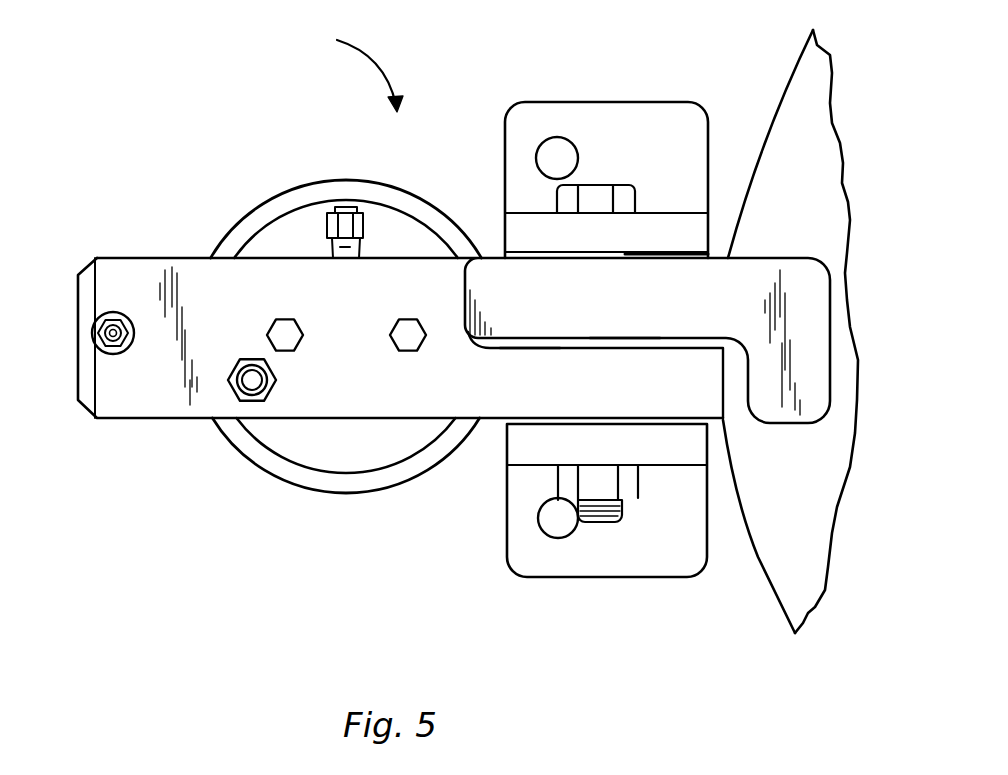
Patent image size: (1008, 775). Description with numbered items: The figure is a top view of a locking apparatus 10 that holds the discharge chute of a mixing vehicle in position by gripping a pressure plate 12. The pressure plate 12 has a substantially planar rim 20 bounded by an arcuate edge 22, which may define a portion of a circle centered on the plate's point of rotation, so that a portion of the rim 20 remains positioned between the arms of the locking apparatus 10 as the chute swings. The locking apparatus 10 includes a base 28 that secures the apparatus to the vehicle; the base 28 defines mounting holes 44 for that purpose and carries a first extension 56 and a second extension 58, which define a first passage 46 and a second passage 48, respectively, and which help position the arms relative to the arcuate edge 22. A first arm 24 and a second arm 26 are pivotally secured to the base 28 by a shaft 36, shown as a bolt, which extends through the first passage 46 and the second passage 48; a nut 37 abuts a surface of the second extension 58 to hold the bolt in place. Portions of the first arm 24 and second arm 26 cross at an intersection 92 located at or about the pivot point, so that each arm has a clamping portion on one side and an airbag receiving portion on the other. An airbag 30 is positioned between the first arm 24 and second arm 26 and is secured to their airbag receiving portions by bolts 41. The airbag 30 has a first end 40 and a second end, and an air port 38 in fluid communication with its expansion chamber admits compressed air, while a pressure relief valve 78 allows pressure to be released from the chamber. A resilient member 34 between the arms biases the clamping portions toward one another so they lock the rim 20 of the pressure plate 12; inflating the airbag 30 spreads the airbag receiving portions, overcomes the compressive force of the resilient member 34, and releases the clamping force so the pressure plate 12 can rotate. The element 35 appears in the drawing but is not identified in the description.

The locking apparatus 10 is at (351, 67).
The pressure plate 12 is at (778, 503).
The rim 20 is at (798, 138).
The arcuate edge 22 is at (758, 557).
The first arm 24 is at (589, 396).
The second arm 26 is at (522, 303).
The base 28 is at (660, 113).
The airbag 30 is at (297, 208).
The resilient member 34 is at (113, 315).
The nut 35 is at (592, 198).
The shaft 36 is at (623, 345).
The nut 37 is at (632, 493).
The air port 38 is at (345, 200).
The first end 40 is at (382, 233).
The bolts 41 is at (392, 347).
The mounting holes 44 is at (551, 148).
The first passage 46 is at (627, 257).
The second passage 48 is at (562, 420).
The first extension 56 is at (680, 230).
The second extension 58 is at (607, 500).
The pressure relief valve 78 is at (252, 395).
The intersection 92 is at (530, 352).